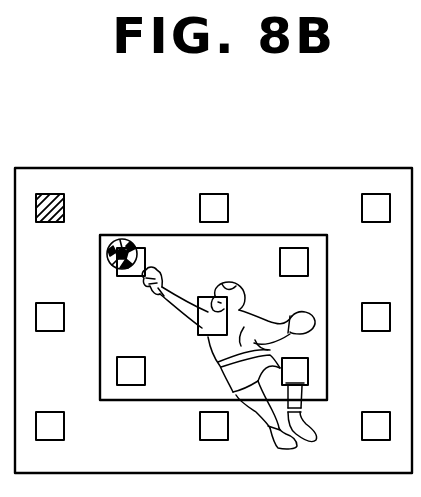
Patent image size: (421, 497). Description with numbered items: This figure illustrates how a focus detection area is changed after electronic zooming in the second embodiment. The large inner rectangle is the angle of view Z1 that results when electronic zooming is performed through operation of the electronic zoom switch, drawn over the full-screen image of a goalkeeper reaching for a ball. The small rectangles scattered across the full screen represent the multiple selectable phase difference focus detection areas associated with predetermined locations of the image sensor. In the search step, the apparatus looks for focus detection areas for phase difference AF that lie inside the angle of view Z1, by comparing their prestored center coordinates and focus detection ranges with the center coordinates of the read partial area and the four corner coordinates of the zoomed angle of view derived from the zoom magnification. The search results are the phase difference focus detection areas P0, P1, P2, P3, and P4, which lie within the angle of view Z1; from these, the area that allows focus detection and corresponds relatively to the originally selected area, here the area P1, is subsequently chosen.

The angle of view after electronic zooming Z1 is at (165, 235).
The phase difference focus detection area P0 is at (203, 297).
The phase difference focus detection area P1 is at (140, 248).
The phase difference focus detection area P2 is at (290, 248).
The phase difference focus detection area P3 is at (125, 357).
The phase difference focus detection area P4 is at (308, 358).